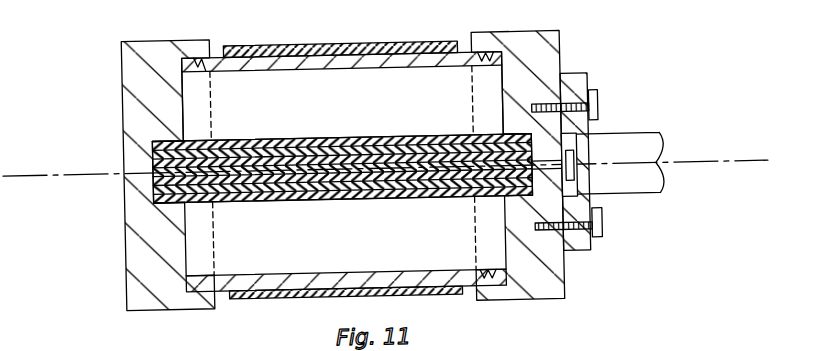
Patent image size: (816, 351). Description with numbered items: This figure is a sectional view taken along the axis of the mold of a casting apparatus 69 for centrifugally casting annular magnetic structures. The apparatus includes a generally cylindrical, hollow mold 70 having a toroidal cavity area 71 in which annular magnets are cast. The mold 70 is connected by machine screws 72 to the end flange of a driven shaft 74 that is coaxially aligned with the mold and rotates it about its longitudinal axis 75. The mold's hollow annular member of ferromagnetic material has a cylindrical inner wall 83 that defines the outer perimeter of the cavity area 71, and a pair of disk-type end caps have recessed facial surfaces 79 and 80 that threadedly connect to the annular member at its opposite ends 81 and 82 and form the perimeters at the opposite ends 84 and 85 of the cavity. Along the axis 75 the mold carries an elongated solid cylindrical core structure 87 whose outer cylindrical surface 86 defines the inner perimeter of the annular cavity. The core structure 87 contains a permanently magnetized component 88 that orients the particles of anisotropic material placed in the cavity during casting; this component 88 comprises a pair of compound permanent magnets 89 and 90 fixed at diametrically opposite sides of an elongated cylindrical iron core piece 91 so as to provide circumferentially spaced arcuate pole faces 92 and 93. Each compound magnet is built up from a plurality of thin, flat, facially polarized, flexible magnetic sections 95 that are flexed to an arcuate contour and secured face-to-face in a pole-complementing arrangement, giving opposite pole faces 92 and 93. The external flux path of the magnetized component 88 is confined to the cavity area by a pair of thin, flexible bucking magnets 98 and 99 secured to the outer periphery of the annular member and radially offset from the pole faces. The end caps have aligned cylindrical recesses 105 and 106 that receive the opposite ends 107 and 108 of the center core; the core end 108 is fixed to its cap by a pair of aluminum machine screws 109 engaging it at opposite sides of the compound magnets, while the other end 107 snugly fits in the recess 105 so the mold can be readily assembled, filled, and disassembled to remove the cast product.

The casting apparatus 69 is at (563, 47).
The mold 70 is at (124, 63).
The cavity area 71 is at (498, 90).
The machine screws 72 is at (600, 106).
The driven shaft 74 is at (651, 135).
The longitudinal axis 75 is at (748, 165).
The recessed facial surface 79 is at (189, 246).
The recessed facial surface 80 is at (497, 248).
The end of annular member 81 is at (184, 64).
The end of annular member 82 is at (504, 58).
The cylindrical inner wall 83 is at (336, 50).
The end of cavity area 84 is at (184, 98).
The end of cavity area 85 is at (501, 131).
The outer cylindrical surface 86 is at (295, 135).
The core structure 87 is at (395, 135).
The permanently magnetized component 88 is at (496, 134).
The compound permanent magnet 89 is at (440, 135).
The compound permanent magnet 90 is at (254, 198).
The iron core piece 91 is at (153, 173).
The arcuate pole face 92 is at (343, 135).
The arcuate pole face 93 is at (310, 198).
The flexible magnetic sections 95 is at (246, 135).
The bucking magnet 98 is at (272, 41).
The bucking magnet 99 is at (275, 295).
The cylindrical recess 105 is at (167, 199).
The cylindrical recess 106 is at (550, 226).
The end of center core 107 is at (153, 153).
The end of center core 108 is at (578, 144).
The aluminum machine screws 109 is at (580, 178).